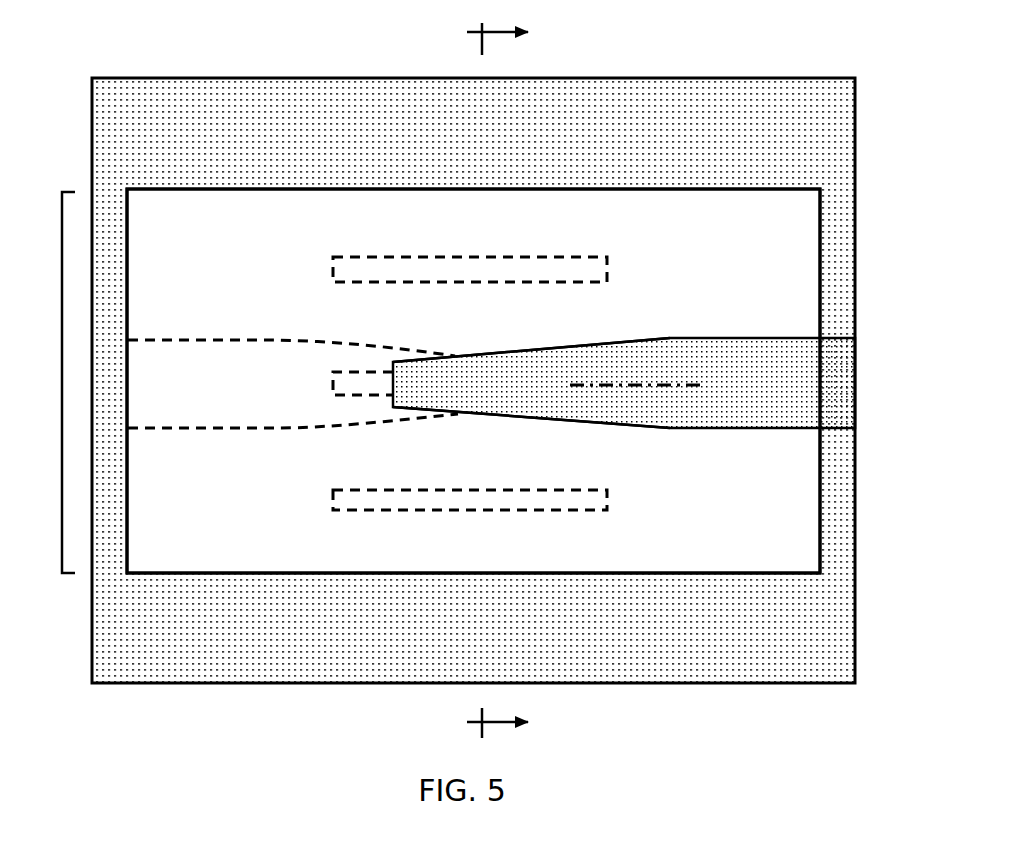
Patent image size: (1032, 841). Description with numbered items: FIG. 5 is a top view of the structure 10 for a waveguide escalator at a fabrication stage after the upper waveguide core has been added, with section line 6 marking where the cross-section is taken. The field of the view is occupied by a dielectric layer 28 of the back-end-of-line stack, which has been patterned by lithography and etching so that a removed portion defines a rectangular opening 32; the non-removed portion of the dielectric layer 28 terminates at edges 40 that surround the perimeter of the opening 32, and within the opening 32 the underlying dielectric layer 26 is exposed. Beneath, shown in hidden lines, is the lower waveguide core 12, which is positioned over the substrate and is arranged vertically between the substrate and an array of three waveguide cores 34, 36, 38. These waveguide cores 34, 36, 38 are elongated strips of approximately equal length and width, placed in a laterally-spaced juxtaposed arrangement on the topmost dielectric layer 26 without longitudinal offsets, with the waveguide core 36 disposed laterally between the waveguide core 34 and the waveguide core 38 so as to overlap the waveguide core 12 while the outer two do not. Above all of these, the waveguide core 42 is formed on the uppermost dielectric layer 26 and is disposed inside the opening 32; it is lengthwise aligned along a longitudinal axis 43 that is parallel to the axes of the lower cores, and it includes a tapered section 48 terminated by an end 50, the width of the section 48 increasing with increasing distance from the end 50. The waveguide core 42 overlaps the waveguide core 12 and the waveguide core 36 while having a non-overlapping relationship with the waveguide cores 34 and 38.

The structure 10 is at (115, 52).
The dielectric layers 28 is at (790, 148).
The dielectric layers 26 is at (797, 528).
The edges 40 is at (820, 224).
The opening 32 is at (62, 383).
The waveguide core 12 is at (160, 400).
The waveguide core 34 is at (352, 261).
The waveguide core 36 is at (353, 381).
The waveguide core 38 is at (373, 505).
The waveguide core 42 is at (676, 311).
The end 50 is at (393, 370).
The section 48 is at (480, 383).
The longitudinal axis 43 is at (630, 385).
The section line 6- 6 is at (515, 379).